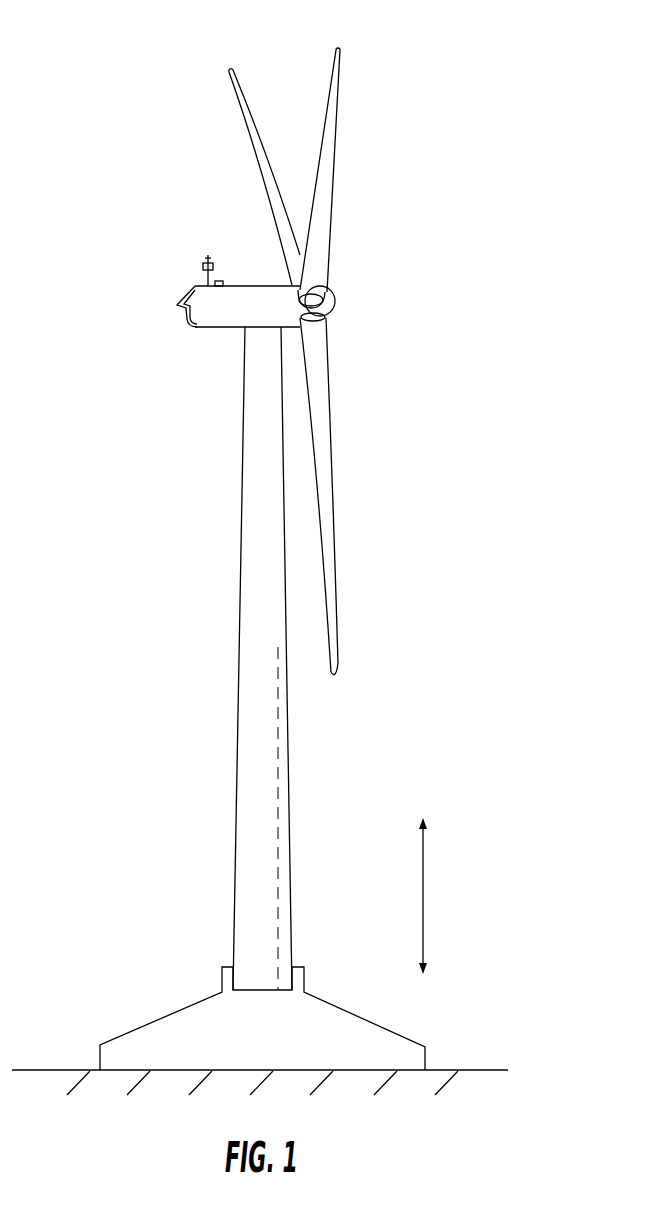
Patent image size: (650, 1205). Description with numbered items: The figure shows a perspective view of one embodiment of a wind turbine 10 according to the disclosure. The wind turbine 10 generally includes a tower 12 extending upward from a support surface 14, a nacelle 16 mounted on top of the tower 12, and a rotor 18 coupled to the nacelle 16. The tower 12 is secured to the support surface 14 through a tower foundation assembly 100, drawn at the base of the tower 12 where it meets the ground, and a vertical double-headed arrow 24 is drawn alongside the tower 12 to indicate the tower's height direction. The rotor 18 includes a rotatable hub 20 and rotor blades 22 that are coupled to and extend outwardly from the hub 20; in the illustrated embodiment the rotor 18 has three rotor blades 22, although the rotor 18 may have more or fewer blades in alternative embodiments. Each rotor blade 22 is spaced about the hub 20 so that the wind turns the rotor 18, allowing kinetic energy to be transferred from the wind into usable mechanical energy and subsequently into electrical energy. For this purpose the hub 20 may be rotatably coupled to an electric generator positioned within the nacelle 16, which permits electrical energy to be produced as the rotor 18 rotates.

The wind turbine 10 is at (452, 108).
The tower 12 is at (250, 730).
The support surface 14 is at (489, 1056).
The nacelle 16 is at (215, 332).
The rotor 18 is at (347, 278).
The rotatable hub 20 is at (336, 308).
The rotor blade 22 is at (271, 163).
The tower height direction 24 is at (425, 898).
The foundation / base 100 is at (153, 979).